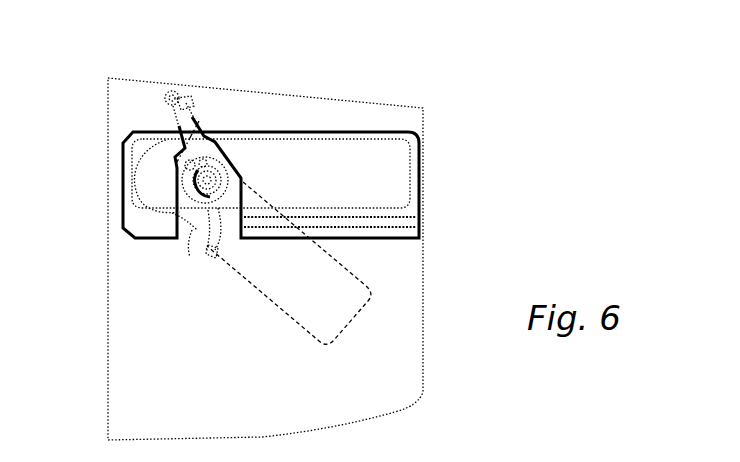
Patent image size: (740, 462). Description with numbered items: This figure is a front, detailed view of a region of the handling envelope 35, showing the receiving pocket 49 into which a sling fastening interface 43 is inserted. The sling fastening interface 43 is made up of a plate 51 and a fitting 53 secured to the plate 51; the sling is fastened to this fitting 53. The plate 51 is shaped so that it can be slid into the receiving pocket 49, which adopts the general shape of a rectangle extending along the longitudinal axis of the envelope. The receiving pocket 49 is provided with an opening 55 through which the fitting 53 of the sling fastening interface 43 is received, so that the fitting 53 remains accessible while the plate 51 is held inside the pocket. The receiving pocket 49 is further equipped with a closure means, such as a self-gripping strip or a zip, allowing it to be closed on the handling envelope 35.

The handling envelope 35 is at (393, 382).
The sling fastening interface 43 is at (204, 110).
The receiving pocket 49 is at (147, 243).
The plate 51 is at (360, 139).
The fitting 53 is at (228, 165).
The opening 55 is at (197, 230).